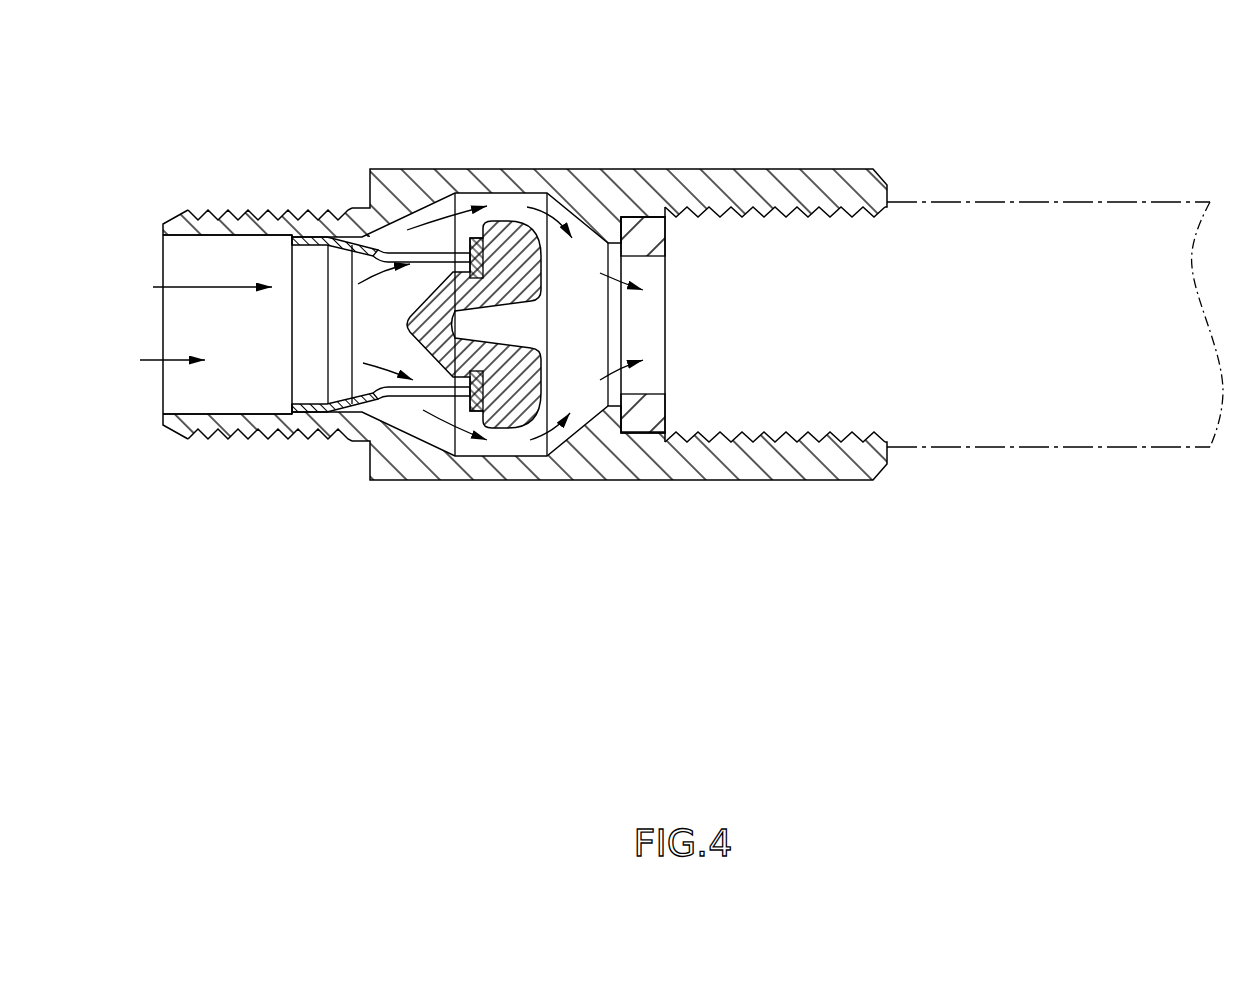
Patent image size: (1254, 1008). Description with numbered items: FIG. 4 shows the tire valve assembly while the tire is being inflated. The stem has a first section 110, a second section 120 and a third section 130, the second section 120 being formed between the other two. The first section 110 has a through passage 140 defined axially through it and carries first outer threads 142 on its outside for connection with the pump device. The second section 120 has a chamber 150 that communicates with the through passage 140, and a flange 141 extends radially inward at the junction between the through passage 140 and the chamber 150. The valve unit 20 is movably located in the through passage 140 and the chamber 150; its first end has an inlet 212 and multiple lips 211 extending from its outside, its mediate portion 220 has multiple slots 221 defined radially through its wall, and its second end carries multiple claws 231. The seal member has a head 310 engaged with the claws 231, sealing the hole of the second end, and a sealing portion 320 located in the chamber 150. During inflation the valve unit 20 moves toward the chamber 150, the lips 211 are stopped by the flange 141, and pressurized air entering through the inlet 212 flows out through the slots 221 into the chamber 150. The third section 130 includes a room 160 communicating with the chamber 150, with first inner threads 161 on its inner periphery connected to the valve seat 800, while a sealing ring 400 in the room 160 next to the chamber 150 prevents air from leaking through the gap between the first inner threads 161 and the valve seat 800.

The valve unit 20 is at (420, 403).
The first section 110 is at (213, 450).
The second section 120 is at (466, 481).
The third section 130 is at (762, 481).
The through passage 140 is at (188, 411).
The flange 141 is at (353, 397).
The first outer threads 142 is at (260, 435).
The chamber 150 is at (577, 392).
The room 160 is at (831, 413).
The first inner threads 161 is at (865, 378).
The lips 211 is at (318, 247).
The inlet 212 is at (293, 262).
The mediate portion 220 is at (420, 275).
The slots 221 is at (386, 243).
The claws 231 is at (495, 228).
The head 310 is at (416, 320).
The sealing portion 320 is at (510, 418).
The sealing ring 400 is at (649, 228).
The valve seat 800 is at (1099, 198).